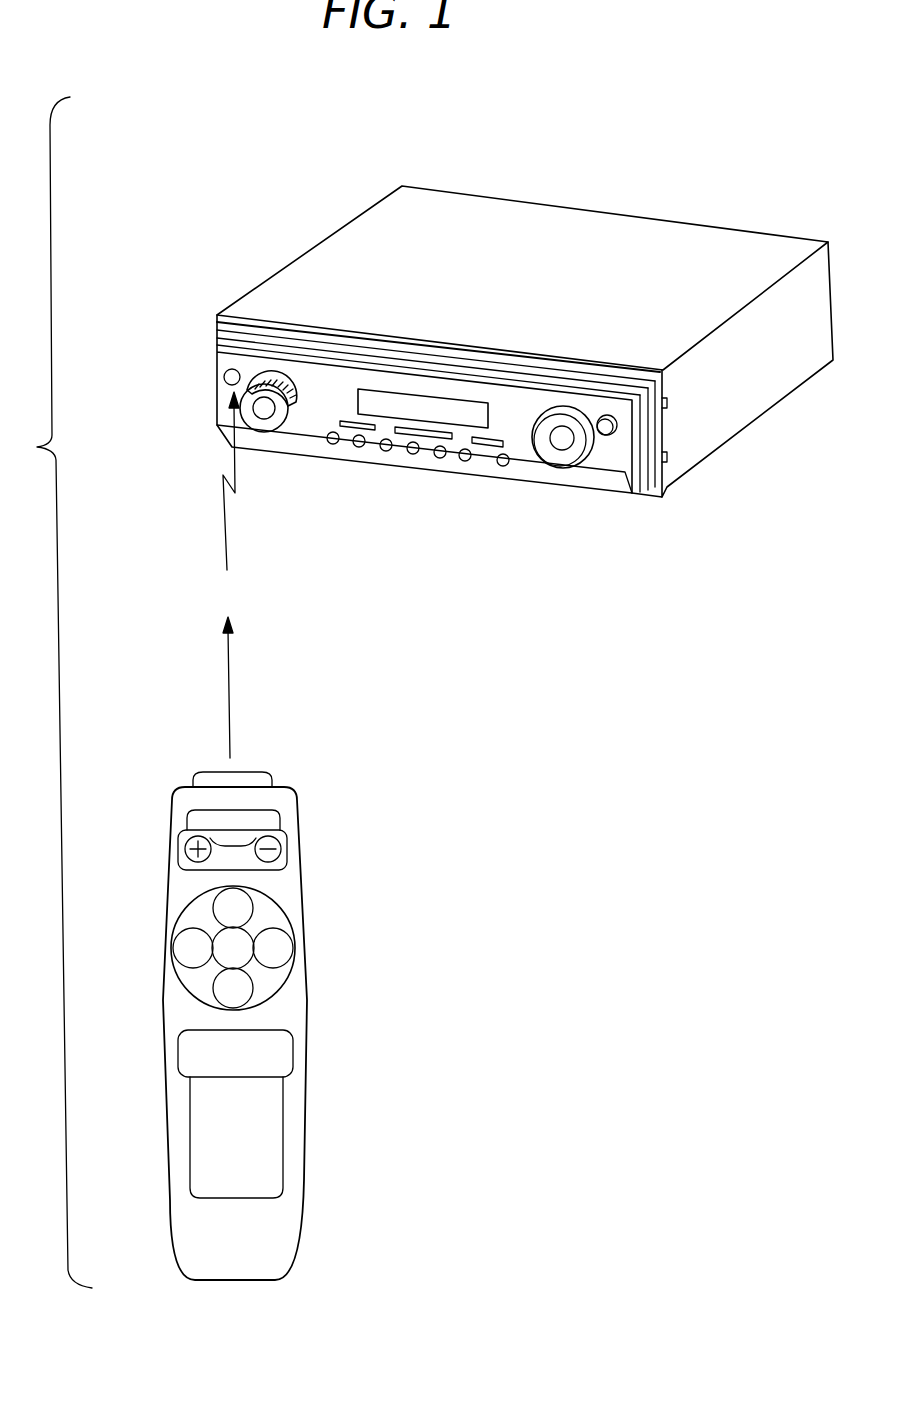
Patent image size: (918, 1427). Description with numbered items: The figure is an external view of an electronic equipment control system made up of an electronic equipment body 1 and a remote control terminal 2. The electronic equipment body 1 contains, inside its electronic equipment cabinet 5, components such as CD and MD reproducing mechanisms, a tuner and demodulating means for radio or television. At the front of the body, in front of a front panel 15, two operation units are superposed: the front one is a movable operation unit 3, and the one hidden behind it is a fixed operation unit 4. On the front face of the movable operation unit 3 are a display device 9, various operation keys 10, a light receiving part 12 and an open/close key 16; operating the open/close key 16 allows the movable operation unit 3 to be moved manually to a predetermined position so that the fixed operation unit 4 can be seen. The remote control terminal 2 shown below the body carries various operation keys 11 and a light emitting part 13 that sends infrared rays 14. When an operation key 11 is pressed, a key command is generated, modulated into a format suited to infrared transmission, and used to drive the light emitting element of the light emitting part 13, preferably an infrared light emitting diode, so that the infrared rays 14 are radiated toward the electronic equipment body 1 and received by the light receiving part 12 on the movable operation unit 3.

The electronic equipment body 1 is at (574, 189).
The remote control terminal 2 is at (310, 1142).
The movable operation unit 3 is at (538, 483).
The fixed operation unit 4 is at (498, 362).
The electronic equipment cabinet 5 is at (733, 245).
The display device 9 is at (466, 418).
The operation keys 10 is at (270, 428).
The operation keys 11 is at (280, 938).
The light receiving part 12 is at (222, 380).
The light emitting part 13 is at (258, 771).
The infrared rays 14 is at (229, 671).
The front panel 15 is at (666, 402).
The open/close key 16 is at (607, 437).